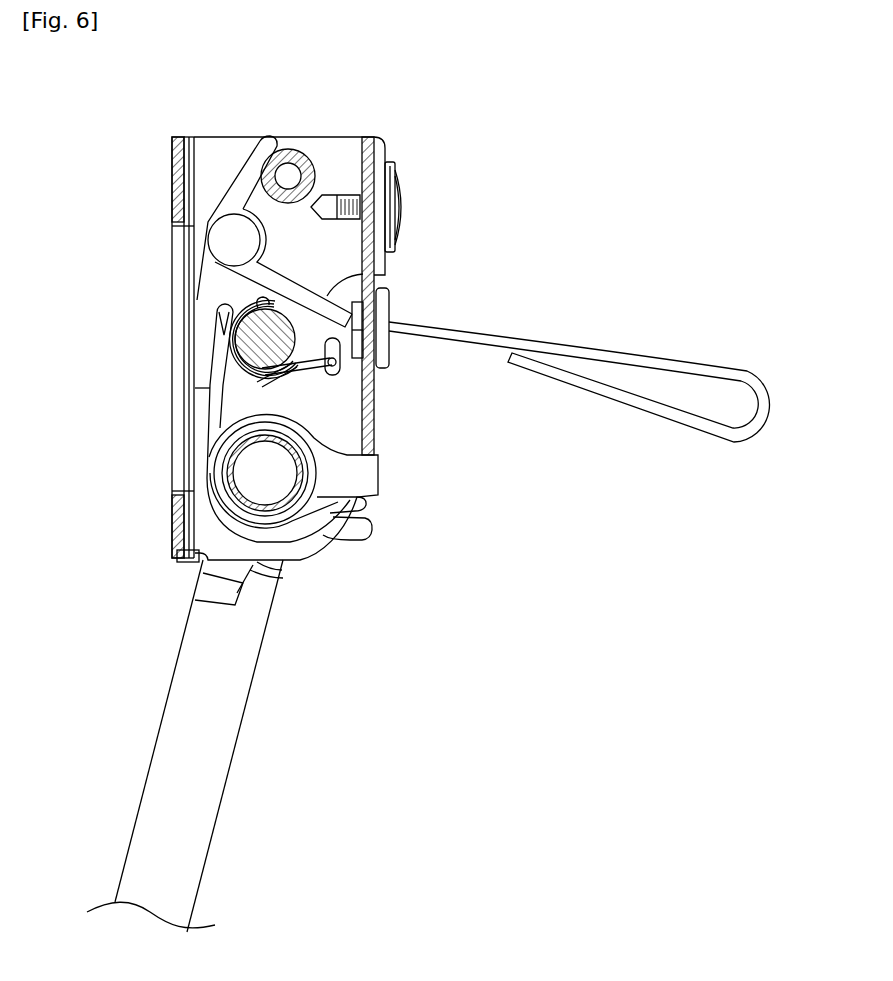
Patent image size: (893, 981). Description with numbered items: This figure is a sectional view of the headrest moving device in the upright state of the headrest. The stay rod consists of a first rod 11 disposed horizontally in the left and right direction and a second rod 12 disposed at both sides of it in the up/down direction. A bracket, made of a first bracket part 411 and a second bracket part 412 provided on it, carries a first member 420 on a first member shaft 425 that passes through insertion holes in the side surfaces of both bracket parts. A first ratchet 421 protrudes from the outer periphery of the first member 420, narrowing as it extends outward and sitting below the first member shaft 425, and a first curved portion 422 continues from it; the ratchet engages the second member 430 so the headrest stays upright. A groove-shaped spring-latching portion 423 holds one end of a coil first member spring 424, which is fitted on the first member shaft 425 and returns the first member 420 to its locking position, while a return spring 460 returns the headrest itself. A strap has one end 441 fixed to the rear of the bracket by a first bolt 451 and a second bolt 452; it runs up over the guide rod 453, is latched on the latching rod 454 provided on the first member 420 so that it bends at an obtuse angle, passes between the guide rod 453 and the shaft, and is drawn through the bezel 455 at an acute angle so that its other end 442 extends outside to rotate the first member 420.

The first rod 11 is at (280, 507).
The second rod 12 is at (198, 690).
The first bracket part 411 is at (177, 513).
The second bracket part 412 is at (218, 158).
The first member 420 is at (200, 266).
The first ratchet 421 is at (237, 400).
The first curved portion 422 is at (268, 385).
The spring-latching portion 423 is at (255, 299).
The first member spring 424 is at (307, 367).
The first member shaft 425 is at (252, 338).
The second member 430 is at (397, 490).
The one end of the strap 441 is at (380, 226).
The other end of the strap 442 is at (748, 374).
The first bolt 451 is at (395, 175).
The second bolt 452 is at (405, 208).
The guide rod 453 is at (296, 150).
The latching rod 454 is at (233, 240).
The bezel 455 is at (384, 348).
The return spring 460 is at (316, 492).